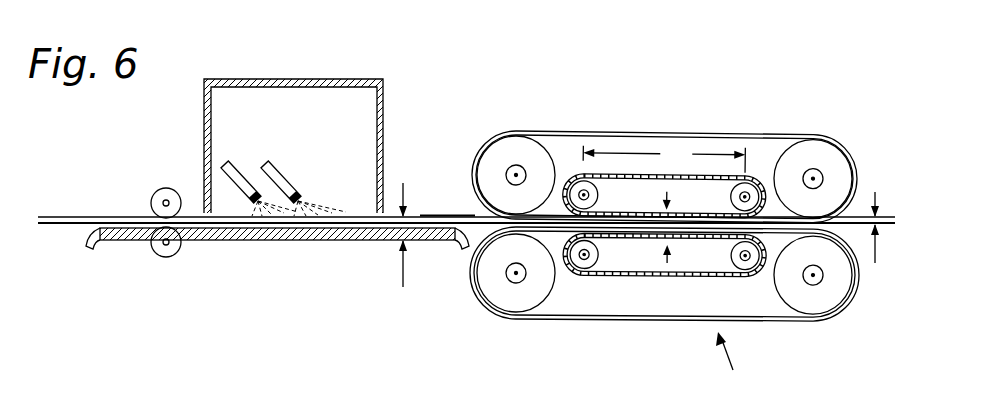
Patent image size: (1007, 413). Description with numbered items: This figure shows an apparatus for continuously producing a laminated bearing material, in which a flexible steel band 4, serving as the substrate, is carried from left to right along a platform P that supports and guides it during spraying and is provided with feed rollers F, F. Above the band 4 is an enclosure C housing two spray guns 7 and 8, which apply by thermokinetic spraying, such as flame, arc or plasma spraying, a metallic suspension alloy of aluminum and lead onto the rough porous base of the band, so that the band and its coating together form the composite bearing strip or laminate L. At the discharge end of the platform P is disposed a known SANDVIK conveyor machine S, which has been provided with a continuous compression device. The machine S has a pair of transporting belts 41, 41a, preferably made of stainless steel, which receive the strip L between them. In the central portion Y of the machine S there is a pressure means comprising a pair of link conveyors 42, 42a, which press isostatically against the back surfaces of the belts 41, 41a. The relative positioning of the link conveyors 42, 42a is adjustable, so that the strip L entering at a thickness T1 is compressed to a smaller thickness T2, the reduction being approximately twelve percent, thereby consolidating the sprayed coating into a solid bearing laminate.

The flexible steel band 4 is at (62, 229).
The feed rollers F is at (158, 190).
The spray chamber C is at (383, 96).
The spray gun 7 is at (241, 175).
The spray gun 8 is at (287, 175).
The platform P is at (298, 241).
The composite bearing strip L is at (447, 213).
The initial thickness T1 is at (402, 252).
The reduced thickness T2 is at (880, 249).
The transporting belt 41 is at (628, 131).
The transporting belt 41a is at (628, 320).
The link conveyor 42 is at (703, 173).
The link conveyor 42a is at (713, 276).
The central portion Y is at (664, 157).
The SANDVIK conveyor machine S is at (724, 366).